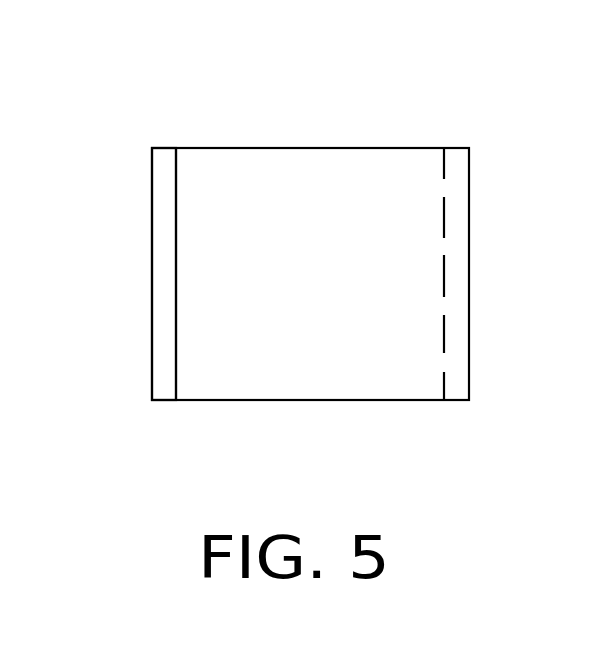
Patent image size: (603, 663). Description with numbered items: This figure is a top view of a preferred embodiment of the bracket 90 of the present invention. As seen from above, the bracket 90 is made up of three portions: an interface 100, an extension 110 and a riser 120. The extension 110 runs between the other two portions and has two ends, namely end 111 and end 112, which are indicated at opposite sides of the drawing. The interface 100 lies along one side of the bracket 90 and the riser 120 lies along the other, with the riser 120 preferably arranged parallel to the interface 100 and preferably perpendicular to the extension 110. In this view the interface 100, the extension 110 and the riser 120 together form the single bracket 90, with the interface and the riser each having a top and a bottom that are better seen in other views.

The bracket 90 is at (328, 107).
The interface 100 is at (458, 400).
The extension 110 is at (283, 400).
The end 111 is at (444, 247).
The end 112 is at (176, 223).
The riser 120 is at (166, 400).